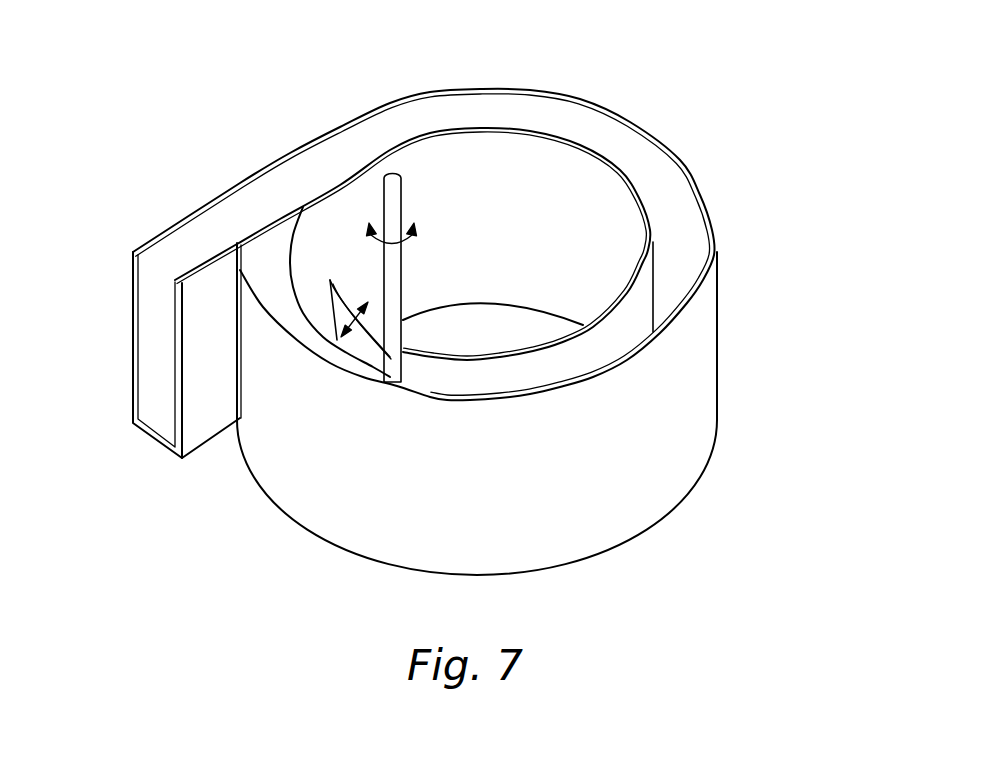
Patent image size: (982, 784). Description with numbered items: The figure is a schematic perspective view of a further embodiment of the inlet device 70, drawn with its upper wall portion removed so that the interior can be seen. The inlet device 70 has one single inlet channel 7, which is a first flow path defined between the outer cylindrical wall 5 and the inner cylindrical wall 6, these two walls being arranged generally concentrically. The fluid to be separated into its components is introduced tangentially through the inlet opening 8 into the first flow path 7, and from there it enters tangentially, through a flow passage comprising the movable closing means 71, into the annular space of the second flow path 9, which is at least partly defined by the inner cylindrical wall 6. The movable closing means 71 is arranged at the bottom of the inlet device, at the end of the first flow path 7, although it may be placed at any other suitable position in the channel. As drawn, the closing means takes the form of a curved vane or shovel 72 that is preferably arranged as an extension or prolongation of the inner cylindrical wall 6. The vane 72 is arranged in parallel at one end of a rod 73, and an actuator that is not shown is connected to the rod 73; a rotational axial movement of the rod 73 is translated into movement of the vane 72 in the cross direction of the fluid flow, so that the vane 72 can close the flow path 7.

The outer cylindrical wall 5 is at (713, 207).
The inner cylindrical wall 6 is at (647, 207).
The inlet channel 7 is at (633, 162).
The inlet opening 8 is at (158, 342).
The second flow path 9 is at (493, 340).
The inlet device 70 is at (208, 143).
The movable closing means 71 is at (355, 273).
The curved vane 72 is at (362, 342).
The rod 73 is at (402, 197).